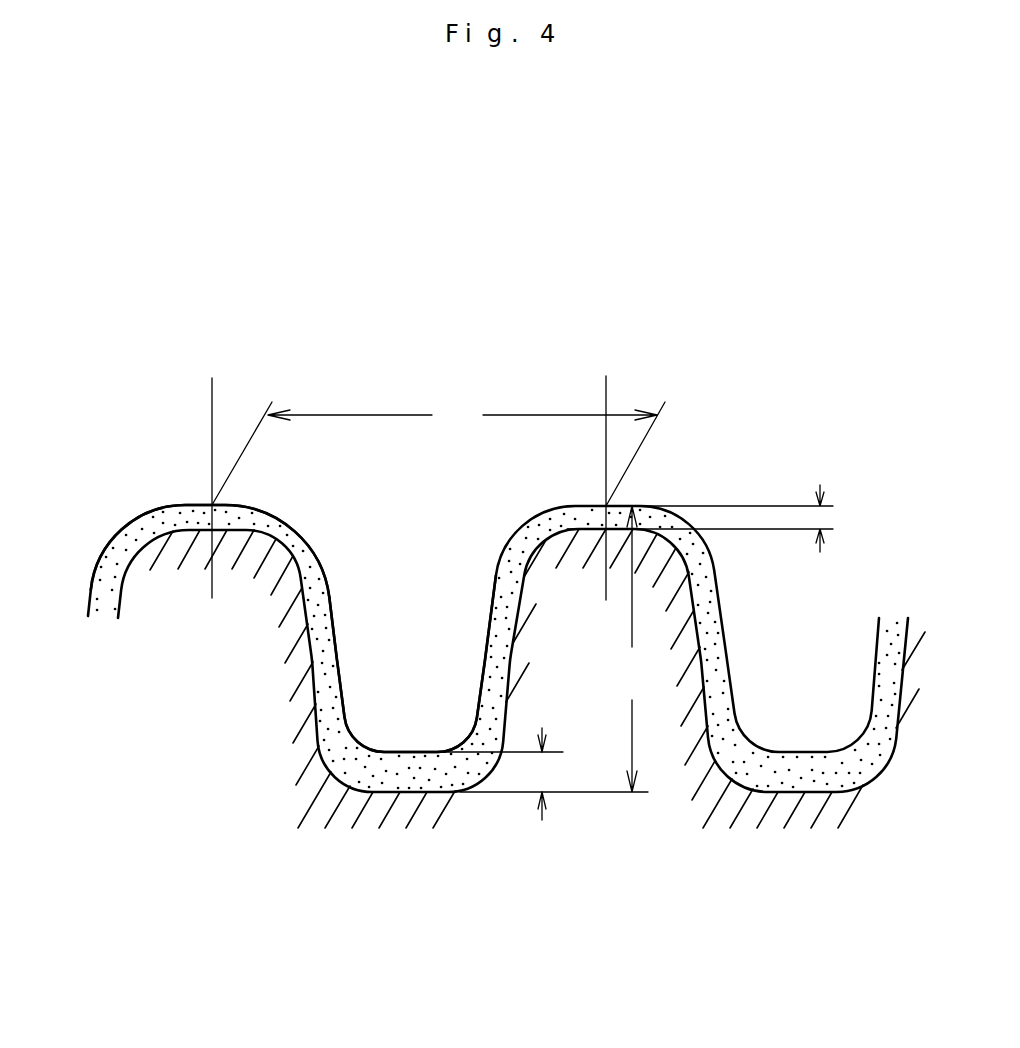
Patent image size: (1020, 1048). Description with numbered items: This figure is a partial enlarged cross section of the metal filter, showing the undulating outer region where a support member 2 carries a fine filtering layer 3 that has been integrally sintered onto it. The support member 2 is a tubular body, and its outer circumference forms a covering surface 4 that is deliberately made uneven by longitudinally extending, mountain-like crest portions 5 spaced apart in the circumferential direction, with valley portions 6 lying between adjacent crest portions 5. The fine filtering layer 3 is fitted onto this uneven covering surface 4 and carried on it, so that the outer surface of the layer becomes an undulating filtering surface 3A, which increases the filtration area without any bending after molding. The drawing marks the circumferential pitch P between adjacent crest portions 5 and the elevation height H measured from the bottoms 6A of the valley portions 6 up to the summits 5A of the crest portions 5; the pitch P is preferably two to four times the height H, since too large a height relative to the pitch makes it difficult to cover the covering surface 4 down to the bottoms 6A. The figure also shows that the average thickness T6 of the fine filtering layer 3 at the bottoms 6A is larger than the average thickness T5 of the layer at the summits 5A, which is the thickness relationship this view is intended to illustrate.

The support member 2 is at (660, 725).
The fine filtering layer 3 is at (498, 611).
The filtering surface 3A is at (690, 524).
The covering surface 4 is at (698, 635).
The crest portion 5 is at (135, 518).
The summit 5A is at (212, 505).
The valley portion 6 is at (384, 564).
The bottom 6A is at (417, 752).
The circumferential pitch P is at (438, 488).
The elevation height H is at (554, 649).
The average thickness at the summits T5 is at (822, 518).
The average thickness at the bottoms T6 is at (540, 772).